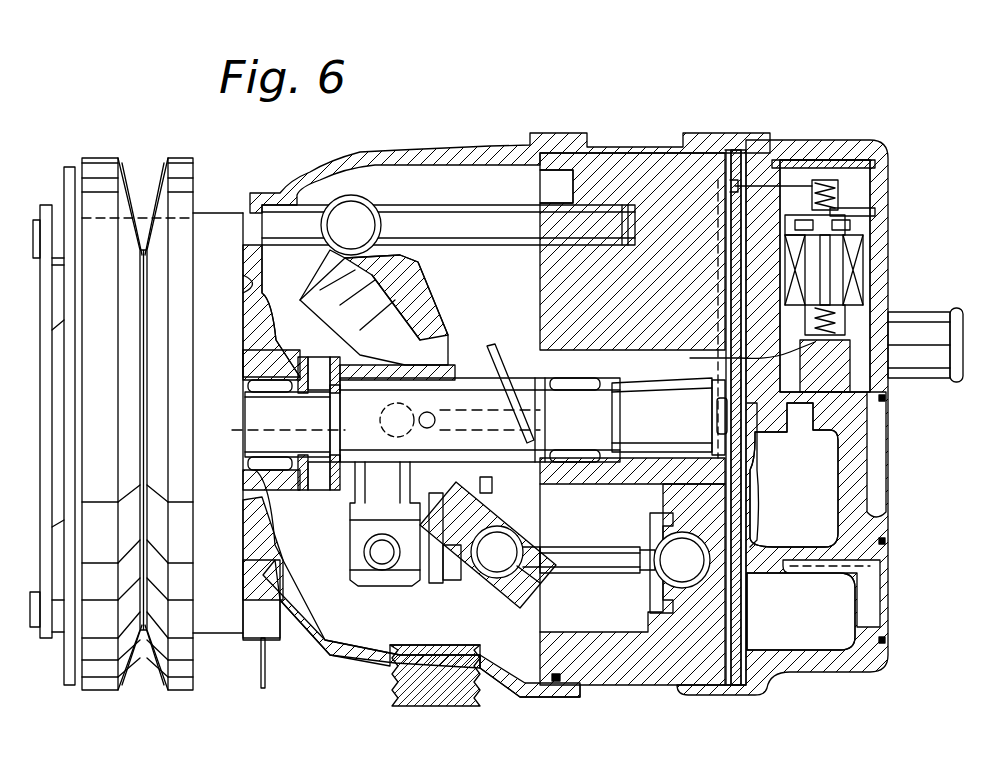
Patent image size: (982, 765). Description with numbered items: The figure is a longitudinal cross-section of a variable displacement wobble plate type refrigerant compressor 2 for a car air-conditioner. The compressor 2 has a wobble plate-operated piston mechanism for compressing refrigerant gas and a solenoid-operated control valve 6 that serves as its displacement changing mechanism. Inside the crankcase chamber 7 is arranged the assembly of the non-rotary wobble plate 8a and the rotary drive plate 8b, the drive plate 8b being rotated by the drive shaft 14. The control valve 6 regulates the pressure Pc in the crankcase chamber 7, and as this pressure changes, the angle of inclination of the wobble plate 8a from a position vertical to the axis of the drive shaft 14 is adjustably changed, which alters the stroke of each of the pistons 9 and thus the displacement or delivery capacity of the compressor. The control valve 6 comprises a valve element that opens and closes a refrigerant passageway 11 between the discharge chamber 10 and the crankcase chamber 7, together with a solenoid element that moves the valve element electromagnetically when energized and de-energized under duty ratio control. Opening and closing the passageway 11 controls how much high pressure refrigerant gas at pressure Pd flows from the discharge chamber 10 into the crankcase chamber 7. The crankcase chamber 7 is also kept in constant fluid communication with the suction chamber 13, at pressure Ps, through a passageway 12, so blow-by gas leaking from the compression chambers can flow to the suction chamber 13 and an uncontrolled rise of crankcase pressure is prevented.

The variable displacement wobble plate type refrigerant compressor 2 is at (600, 130).
The solenoid-operated control valve 6 is at (866, 296).
The crankcase chamber 7 is at (467, 282).
The non-rotary wobble plate 8a is at (492, 598).
The rotary drive plate 8b is at (443, 583).
The piston 9 is at (652, 522).
The discharge chamber 10 is at (790, 494).
The refrigerant passageway 11 is at (760, 180).
The passageway 12 is at (666, 372).
The suction chamber 13 is at (779, 630).
The drive shaft 14 is at (470, 385).